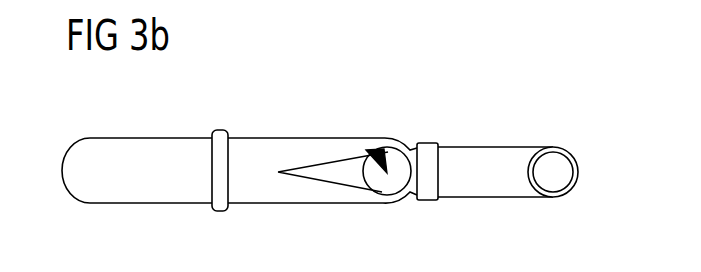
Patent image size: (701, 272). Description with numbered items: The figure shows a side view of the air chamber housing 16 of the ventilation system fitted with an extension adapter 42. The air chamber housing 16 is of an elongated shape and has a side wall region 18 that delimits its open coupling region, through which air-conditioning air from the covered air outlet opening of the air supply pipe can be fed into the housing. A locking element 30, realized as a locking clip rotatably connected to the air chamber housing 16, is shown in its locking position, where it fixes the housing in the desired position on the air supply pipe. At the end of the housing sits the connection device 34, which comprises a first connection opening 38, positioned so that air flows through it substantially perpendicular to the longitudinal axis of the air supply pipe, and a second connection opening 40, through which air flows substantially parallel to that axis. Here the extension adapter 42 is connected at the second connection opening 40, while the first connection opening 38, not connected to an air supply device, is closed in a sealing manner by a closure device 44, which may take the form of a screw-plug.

The air chamber housing 16 is at (530, 122).
The side wall region 18 is at (142, 137).
The locking element 30 is at (218, 171).
The connection device 34 is at (326, 162).
The first connection opening 38 is at (373, 150).
The second connection opening 40 is at (438, 170).
The extension adapter 42 is at (496, 160).
The closure device 44 is at (393, 157).